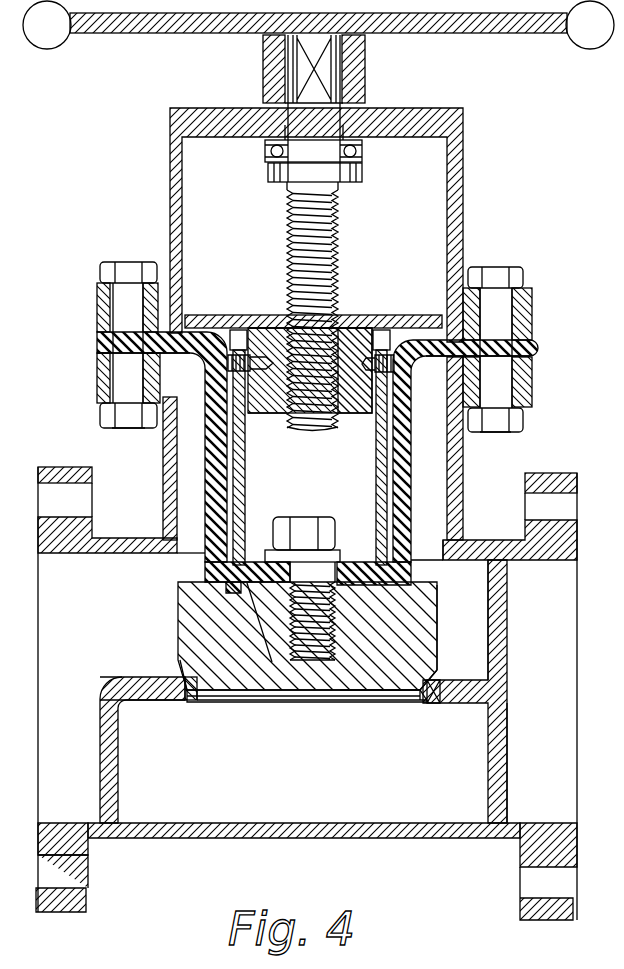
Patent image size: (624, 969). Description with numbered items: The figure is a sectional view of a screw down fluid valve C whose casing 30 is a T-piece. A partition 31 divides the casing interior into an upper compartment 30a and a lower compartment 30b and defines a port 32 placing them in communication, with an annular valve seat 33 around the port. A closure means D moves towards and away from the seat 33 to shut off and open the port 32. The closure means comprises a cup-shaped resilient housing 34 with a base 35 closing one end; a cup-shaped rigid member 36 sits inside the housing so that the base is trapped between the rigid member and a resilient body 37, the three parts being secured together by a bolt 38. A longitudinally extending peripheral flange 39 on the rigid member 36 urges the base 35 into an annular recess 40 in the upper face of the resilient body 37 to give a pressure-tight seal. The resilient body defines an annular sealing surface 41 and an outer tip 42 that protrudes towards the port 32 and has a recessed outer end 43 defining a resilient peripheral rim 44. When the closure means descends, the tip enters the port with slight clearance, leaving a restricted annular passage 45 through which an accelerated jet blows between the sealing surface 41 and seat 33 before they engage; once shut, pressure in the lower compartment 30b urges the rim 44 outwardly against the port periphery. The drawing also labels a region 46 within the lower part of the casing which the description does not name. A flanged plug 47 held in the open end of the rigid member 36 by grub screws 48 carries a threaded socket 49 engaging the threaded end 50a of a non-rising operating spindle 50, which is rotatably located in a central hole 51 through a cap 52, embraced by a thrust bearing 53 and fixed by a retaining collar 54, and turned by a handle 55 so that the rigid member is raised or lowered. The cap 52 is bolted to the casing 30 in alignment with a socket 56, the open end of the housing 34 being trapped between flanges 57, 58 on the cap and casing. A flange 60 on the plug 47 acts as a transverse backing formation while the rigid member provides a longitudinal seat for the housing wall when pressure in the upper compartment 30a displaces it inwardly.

The casing 30 is at (163, 535).
The upper compartment 30a is at (137, 612).
The lower compartment 30b is at (497, 787).
The partition 31 is at (117, 790).
The port 32 is at (315, 705).
The annular valve seat 33 is at (182, 700).
The resilient housing 34 is at (170, 455).
The base 35 is at (447, 550).
The cup-shaped rigid member 36 is at (215, 398).
The resilient body 37 is at (178, 628).
The bolt 38 is at (295, 540).
The peripheral flange 39 is at (215, 566).
The annular recess 40 is at (270, 693).
The annular sealing surface 41 is at (183, 678).
The outer tip 42 is at (272, 662).
The recessed outer end 43 is at (365, 697).
The resilient peripheral rim 44 is at (213, 703).
The restricted annular passage 45 is at (203, 692).
The outlet chamber 46 is at (553, 648).
The flanged plug 47 is at (345, 322).
The grub screws 48 is at (150, 265).
The threaded socket 49 is at (333, 418).
The operating spindle 50 is at (312, 137).
The threaded end 50a is at (290, 252).
The central hole 51 is at (281, 125).
The cap 52 is at (463, 120).
The thrust bearing 53 is at (362, 153).
The retaining collar 54 is at (365, 173).
The handle 55 is at (572, 42).
The socket 56 is at (157, 375).
The flange 57 is at (100, 292).
The flange 58 is at (102, 362).
The flange 60 is at (232, 332).
The valve C is at (152, 480).
The closure means D is at (452, 605).